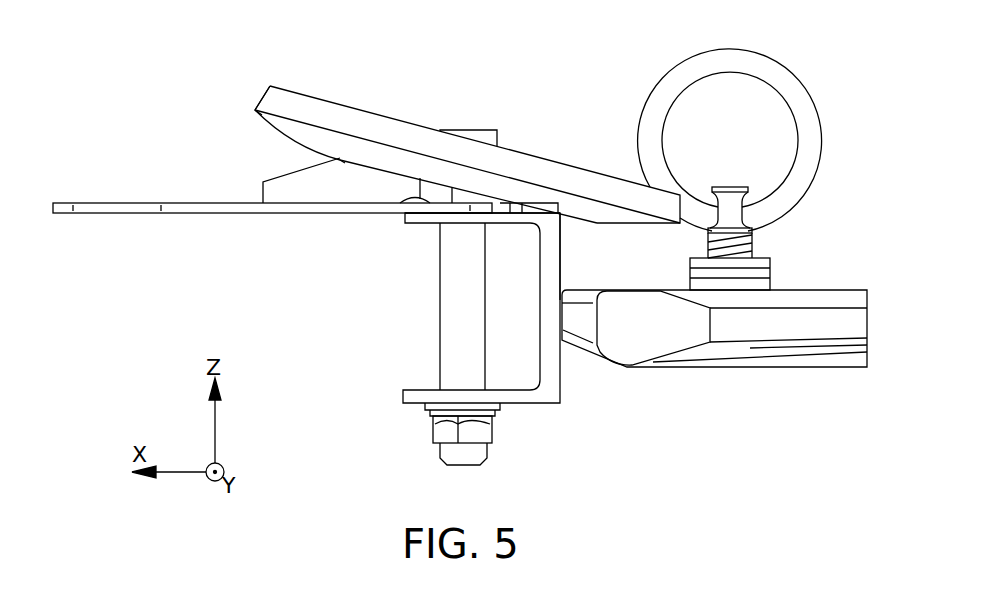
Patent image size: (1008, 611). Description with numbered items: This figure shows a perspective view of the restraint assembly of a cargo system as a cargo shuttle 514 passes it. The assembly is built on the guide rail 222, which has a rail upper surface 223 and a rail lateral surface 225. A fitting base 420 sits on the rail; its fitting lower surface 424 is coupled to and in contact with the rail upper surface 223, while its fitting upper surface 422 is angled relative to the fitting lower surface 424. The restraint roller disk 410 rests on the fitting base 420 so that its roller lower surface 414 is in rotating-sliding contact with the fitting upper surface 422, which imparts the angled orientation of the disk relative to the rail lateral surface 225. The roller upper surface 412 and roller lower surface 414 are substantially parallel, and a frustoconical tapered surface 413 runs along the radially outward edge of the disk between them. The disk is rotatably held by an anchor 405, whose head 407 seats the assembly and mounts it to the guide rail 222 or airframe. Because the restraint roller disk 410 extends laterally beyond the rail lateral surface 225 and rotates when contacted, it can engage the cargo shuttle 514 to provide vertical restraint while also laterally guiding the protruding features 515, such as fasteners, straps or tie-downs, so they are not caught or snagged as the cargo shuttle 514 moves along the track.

The guide rail 222 is at (553, 383).
The rail upper surface 223 is at (411, 206).
The rail lateral surface 225 is at (560, 250).
The anchor 405 is at (462, 333).
The head 407 is at (493, 123).
The restraint roller disk 410 is at (563, 164).
The roller upper surface 412 is at (324, 96).
The frustoconical tapered surface 413 is at (283, 125).
The roller lower surface 414 is at (366, 161).
The fitting base 420 is at (261, 211).
The fitting upper surface 422 is at (377, 158).
The fitting lower surface 424 is at (372, 226).
The cargo shuttle 514 is at (812, 327).
The protruding features 515 is at (767, 212).